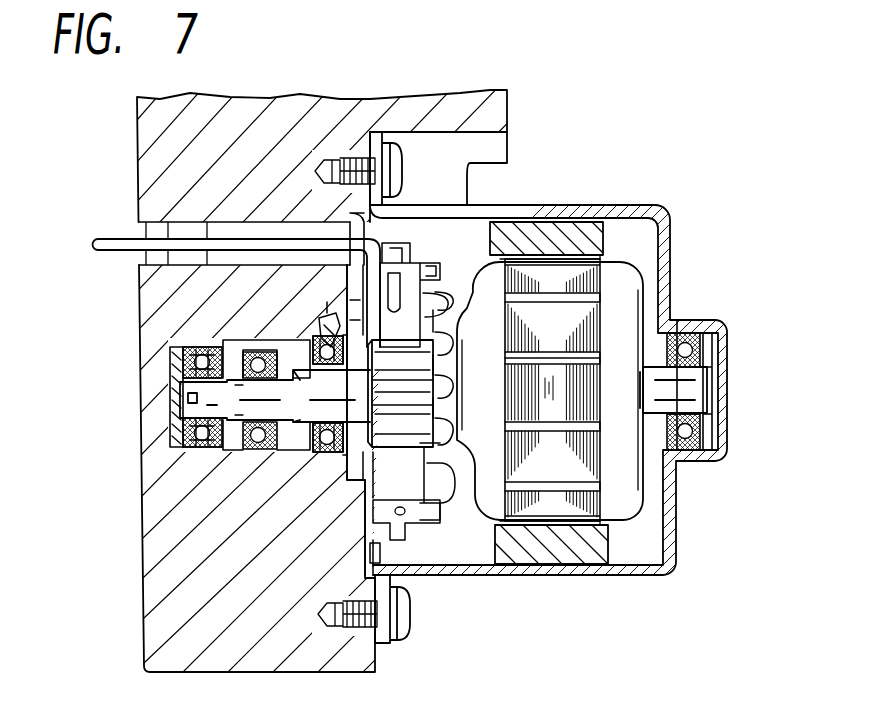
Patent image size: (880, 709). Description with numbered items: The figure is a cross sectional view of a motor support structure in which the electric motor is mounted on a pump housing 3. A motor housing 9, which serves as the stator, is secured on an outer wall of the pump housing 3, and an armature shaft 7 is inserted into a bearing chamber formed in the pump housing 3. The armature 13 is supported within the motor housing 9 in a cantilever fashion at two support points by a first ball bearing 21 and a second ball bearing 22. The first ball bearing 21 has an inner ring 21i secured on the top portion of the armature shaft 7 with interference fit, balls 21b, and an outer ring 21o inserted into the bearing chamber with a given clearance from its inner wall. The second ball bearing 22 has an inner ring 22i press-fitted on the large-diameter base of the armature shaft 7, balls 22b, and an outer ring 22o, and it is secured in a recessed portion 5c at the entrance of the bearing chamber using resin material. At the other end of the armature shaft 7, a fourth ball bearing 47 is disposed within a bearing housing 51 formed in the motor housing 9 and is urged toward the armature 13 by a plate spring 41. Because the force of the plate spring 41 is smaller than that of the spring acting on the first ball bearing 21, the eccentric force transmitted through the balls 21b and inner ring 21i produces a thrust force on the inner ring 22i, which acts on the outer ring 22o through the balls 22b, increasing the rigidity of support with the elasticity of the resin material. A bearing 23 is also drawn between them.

The pump housing 3 is at (386, 106).
The armature 13 is at (558, 278).
The motor housing 9 is at (641, 212).
The fourth ball bearing 47 is at (688, 330).
The bearing housing 51 is at (718, 322).
The armature shaft 7 is at (307, 424).
The plate spring 41 is at (707, 405).
The first ball bearing 21 is at (153, 397).
The inner ring 21i is at (176, 400).
The balls 21b is at (176, 434).
The outer ring 21o is at (200, 450).
The bearing 23 is at (258, 350).
The recessed portion 5c is at (327, 316).
The second ball bearing 22 is at (318, 467).
The inner ring 22i is at (318, 448).
The balls 22b is at (343, 456).
The outer ring 22o is at (350, 458).